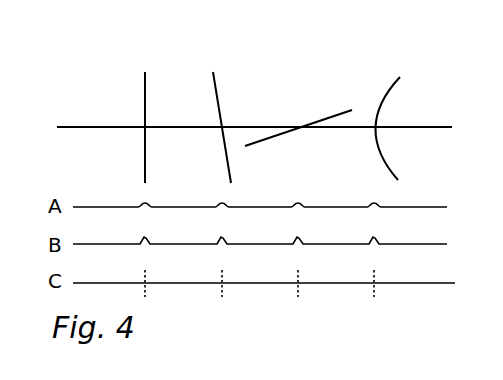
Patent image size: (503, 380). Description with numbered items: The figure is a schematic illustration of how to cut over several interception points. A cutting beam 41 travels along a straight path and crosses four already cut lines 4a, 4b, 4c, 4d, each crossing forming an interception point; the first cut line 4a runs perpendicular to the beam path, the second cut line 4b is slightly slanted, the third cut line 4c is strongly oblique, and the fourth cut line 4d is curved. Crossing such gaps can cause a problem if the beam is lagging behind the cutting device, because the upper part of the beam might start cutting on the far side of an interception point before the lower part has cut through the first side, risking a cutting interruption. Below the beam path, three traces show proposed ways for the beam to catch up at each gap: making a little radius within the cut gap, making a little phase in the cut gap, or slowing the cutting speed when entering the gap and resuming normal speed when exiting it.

The cutting beam 41 is at (110, 126).
The already cut line 4a is at (145, 112).
The already cut line 4b is at (214, 115).
The already cut line 4c is at (298, 112).
The already cut line 4d is at (397, 117).